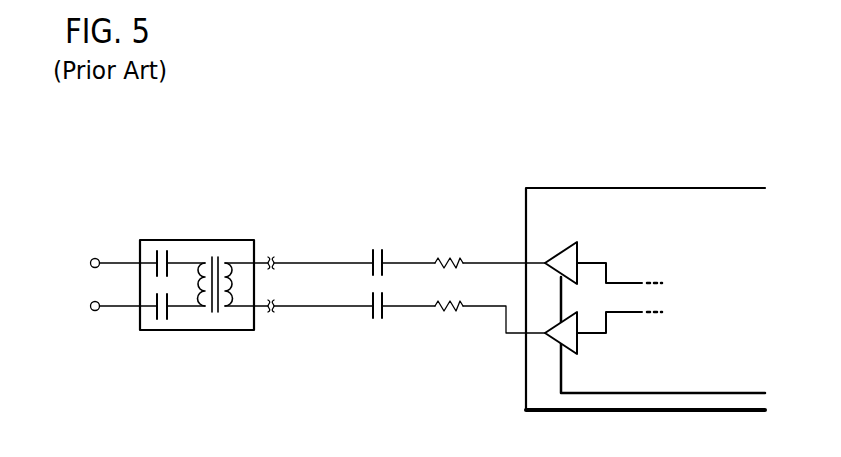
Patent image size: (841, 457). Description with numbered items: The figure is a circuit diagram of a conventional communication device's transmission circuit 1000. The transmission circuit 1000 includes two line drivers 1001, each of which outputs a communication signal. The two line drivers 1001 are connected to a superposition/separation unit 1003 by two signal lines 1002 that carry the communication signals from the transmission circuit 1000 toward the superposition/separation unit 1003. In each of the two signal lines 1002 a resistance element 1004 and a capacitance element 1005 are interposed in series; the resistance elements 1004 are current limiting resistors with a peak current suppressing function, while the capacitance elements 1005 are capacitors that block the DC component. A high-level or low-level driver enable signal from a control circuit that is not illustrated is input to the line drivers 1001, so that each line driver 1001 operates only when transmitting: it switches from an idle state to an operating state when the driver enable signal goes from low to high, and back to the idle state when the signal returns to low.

The transmission circuit 1000 is at (665, 187).
The line driver 1001 is at (562, 248).
The signal line 1002 is at (305, 262).
The superposition/separation unit 1003 is at (222, 240).
The resistance element 1004 is at (452, 258).
The capacitance element 1005 is at (378, 247).